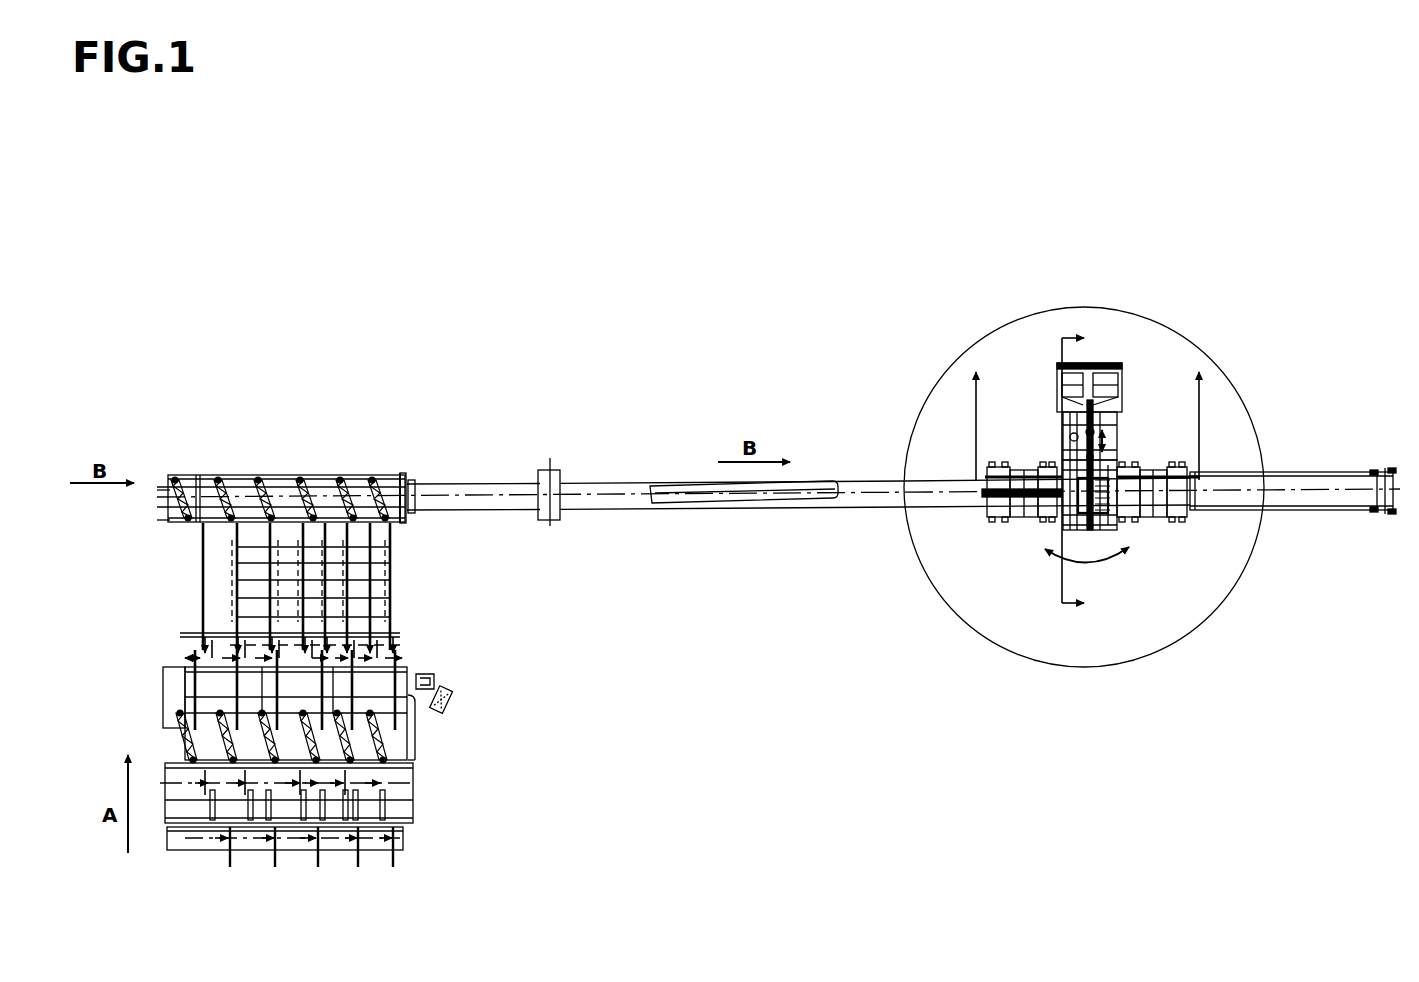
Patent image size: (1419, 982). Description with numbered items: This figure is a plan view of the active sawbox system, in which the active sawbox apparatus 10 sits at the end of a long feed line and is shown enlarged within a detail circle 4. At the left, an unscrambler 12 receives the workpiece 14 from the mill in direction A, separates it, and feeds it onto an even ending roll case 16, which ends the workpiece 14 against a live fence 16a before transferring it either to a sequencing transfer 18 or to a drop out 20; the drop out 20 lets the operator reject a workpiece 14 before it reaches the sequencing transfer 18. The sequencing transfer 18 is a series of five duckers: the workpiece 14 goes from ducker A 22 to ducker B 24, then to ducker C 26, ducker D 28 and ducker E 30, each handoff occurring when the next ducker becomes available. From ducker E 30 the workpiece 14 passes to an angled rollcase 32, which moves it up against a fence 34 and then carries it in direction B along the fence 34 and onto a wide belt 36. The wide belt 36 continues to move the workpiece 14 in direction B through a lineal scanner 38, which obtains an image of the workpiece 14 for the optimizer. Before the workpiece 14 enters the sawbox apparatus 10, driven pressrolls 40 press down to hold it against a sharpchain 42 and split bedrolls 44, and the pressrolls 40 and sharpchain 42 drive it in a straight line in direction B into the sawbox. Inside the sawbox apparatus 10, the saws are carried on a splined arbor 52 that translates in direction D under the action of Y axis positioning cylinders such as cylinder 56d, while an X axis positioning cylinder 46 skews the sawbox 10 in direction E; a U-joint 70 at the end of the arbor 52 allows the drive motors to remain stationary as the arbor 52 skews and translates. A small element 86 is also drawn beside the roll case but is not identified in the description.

The detail circle of grasping and positioning apparatus 4 is at (1165, 644).
The active sawbox apparatus 10 is at (1150, 480).
The unscrambler 12 is at (285, 880).
The workpiece 14 is at (740, 502).
The even ending roll case 16 is at (159, 733).
The live fence 16a is at (407, 717).
The sequencing transfer 18 is at (333, 587).
The drop out 20 is at (178, 651).
The ducker A 22 is at (391, 617).
The ducker B 24 is at (230, 597).
The ducker C 26 is at (393, 580).
The ducker D 28 is at (230, 565).
The ducker E 30 is at (393, 552).
The angled rollcase 32 is at (281, 463).
The fence 34 is at (230, 416).
The wide belt 36 is at (453, 487).
The lineal scanner 38 is at (556, 472).
The driven pressrolls 40 is at (1037, 473).
The sharpchain 42 is at (1032, 500).
The split bedrolls 44 is at (1010, 517).
The X axis positioning cylinder 46 is at (1075, 522).
The arbor 52 is at (1100, 512).
The Y axis positioning cylinder 56d is at (1067, 423).
The U-joint 70 is at (1102, 422).
The clamp element 86 is at (453, 701).